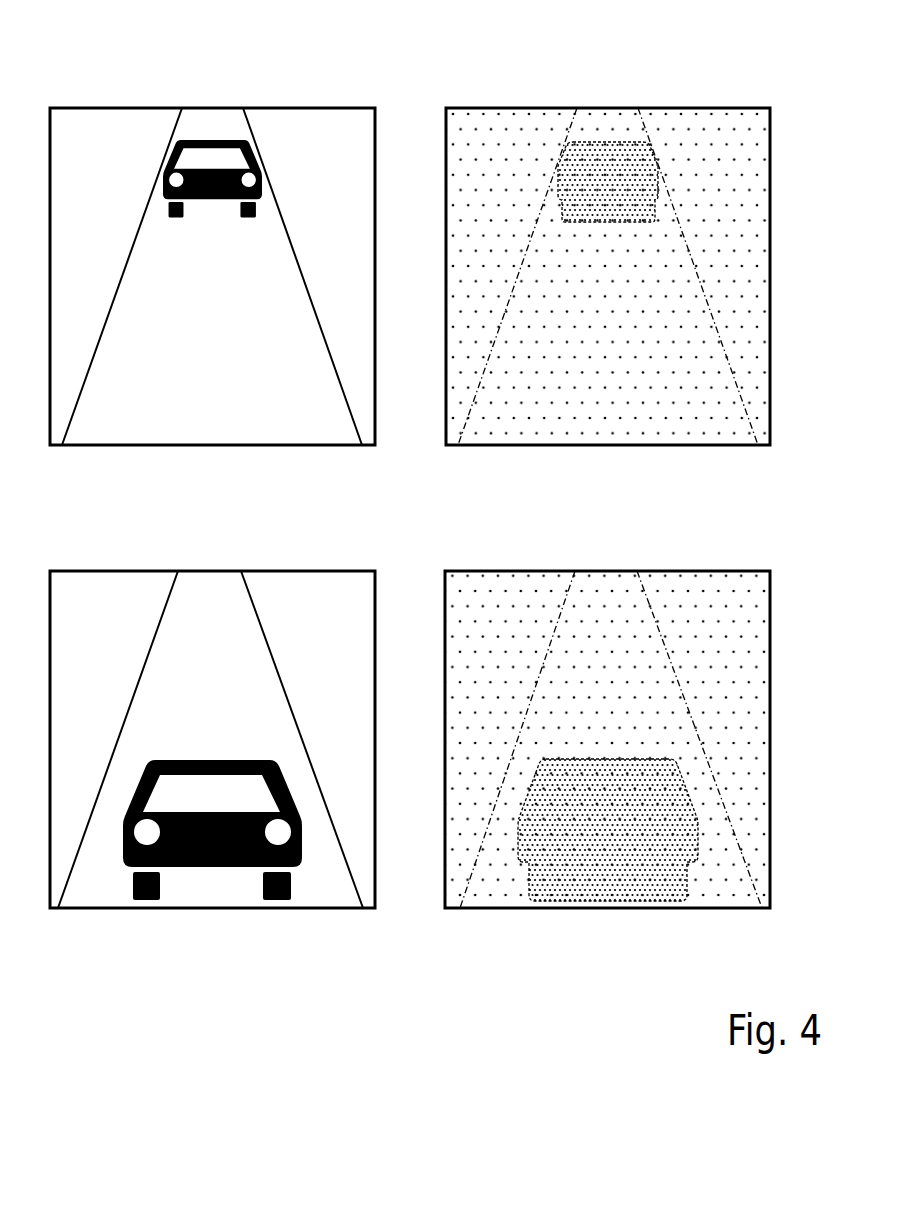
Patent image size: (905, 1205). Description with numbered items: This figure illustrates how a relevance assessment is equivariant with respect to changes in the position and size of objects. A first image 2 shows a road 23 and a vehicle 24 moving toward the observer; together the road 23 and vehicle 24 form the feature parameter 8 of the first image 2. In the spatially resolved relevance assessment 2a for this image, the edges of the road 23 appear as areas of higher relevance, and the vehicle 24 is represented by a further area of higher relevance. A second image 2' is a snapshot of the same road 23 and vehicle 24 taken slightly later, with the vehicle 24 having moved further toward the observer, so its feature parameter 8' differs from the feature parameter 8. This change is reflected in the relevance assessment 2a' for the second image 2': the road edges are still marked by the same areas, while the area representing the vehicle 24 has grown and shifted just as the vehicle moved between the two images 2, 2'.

The first image 2 is at (212, 247).
The second image 2' is at (212, 711).
The relevance assessment 2a is at (608, 247).
The relevance assessment 2a' is at (607, 710).
The feature parameter 8 is at (87, 205).
The feature parameter 8' is at (98, 985).
The road 23 is at (127, 265).
The vehicle 24 is at (164, 184).